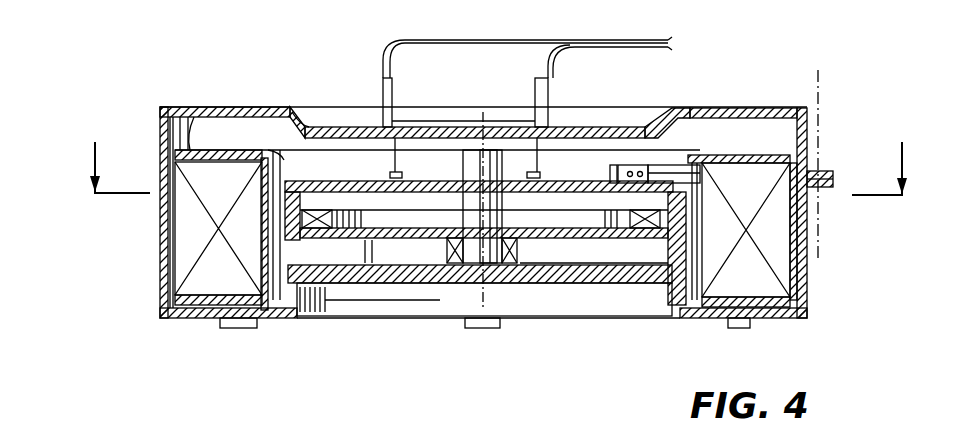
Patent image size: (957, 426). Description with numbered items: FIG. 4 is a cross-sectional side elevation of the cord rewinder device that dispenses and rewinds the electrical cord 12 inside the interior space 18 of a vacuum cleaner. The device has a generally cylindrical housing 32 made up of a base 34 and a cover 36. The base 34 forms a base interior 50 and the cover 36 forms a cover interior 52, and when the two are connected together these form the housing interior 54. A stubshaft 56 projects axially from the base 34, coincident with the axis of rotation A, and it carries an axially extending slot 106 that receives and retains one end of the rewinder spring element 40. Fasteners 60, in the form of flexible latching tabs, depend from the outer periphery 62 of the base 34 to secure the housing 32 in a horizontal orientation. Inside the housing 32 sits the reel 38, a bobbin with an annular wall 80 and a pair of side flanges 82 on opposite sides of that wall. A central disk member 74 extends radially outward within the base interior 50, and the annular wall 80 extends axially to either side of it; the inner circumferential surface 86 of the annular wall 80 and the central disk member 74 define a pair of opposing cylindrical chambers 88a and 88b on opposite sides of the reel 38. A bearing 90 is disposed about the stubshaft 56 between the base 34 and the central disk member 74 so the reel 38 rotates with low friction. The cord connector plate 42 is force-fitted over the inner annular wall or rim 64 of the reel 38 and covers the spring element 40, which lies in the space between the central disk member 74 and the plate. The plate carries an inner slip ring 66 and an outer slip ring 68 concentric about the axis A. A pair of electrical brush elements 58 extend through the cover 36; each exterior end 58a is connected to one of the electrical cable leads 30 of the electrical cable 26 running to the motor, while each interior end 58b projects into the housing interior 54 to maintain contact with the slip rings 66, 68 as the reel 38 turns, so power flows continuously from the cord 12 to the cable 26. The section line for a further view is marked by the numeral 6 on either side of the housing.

The section line 6- 6 is at (500, 166).
The electrical cord 12 is at (479, 207).
The interior space 18 is at (268, 253).
The electrical cable 26 is at (526, 42).
The electrical cable leads 30 is at (393, 47).
The housing 32 is at (147, 225).
The base 34 is at (158, 249).
The cover 36 is at (778, 108).
The reel 38 is at (334, 240).
The rewinder spring element 40 is at (646, 228).
The cord connector plate 42 is at (583, 180).
The base interior 50 is at (800, 273).
The cover interior 52 is at (214, 127).
The housing interior 54 is at (313, 108).
The stubshaft 56 is at (470, 258).
The electrical brush elements 58 is at (492, 122).
The exterior end 58a is at (397, 118).
The interior end 58b is at (438, 127).
The fasteners 60 is at (237, 332).
The outer periphery 62 is at (808, 305).
The inner annular wall or rim 64 is at (312, 195).
The inner electrically-conductive slip ring 66 is at (442, 196).
The outer electrically-conductive slip ring 68 is at (392, 196).
The central disk member 74 is at (576, 230).
The annular wall 80 is at (218, 189).
The side flanges 82 is at (191, 117).
The inner circumferential surface 86 is at (284, 156).
The cylindrical chamber 88a is at (613, 228).
The cylindrical chamber 88b is at (357, 250).
The bearing 90 is at (518, 250).
The axially extending slot 106 is at (486, 262).
The axis of rotation A is at (483, 73).